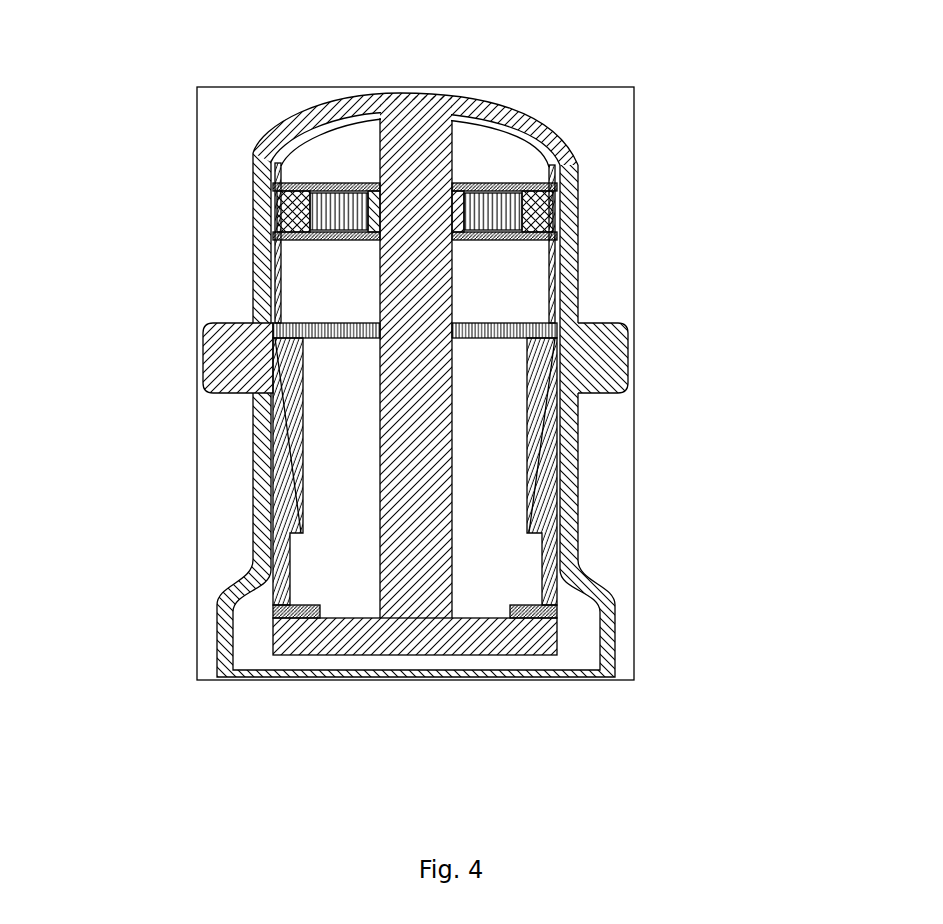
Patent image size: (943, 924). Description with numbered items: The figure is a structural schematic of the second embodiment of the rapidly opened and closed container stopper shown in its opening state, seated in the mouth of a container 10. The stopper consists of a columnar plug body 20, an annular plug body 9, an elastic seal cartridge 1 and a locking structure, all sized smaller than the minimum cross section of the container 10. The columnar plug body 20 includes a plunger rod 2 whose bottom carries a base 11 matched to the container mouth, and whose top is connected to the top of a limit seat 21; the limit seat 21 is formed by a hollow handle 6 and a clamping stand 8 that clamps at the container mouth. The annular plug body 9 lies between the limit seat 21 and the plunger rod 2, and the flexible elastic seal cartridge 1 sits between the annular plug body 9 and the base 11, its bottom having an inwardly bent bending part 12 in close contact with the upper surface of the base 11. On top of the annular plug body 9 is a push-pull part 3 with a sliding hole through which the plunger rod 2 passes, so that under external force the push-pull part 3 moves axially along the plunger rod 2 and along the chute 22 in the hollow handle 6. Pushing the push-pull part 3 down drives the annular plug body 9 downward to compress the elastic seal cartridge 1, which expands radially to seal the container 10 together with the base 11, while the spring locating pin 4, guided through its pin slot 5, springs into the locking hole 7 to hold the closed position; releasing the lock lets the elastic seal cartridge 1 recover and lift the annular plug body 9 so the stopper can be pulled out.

The elastic seal cartridge 1 is at (580, 543).
The plunger rod 2 is at (412, 480).
The push-pull part 3 is at (300, 240).
The spring locating pin 4 is at (300, 214).
The pin slot 5 is at (266, 161).
The hollow handle 6 is at (513, 111).
The locking hole 7 is at (568, 279).
The clamping stand 8 is at (613, 351).
The annular plug body 9 is at (540, 425).
The container 10 is at (615, 623).
The base 11 is at (356, 651).
The bending part 12 is at (529, 616).
The columnar plug body 20 is at (385, 578).
The limit seat 21 is at (273, 320).
The chute 22 is at (553, 167).